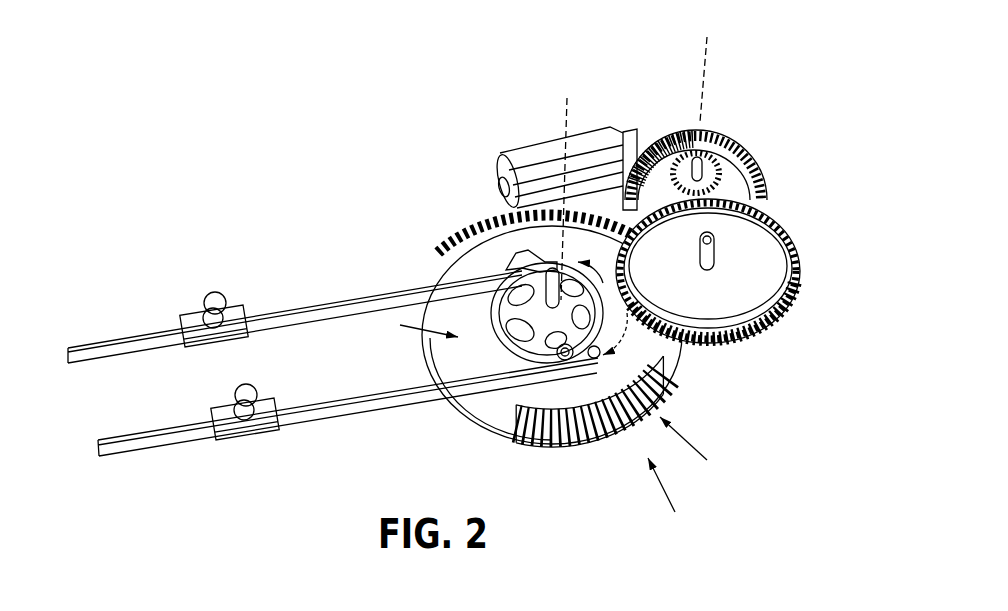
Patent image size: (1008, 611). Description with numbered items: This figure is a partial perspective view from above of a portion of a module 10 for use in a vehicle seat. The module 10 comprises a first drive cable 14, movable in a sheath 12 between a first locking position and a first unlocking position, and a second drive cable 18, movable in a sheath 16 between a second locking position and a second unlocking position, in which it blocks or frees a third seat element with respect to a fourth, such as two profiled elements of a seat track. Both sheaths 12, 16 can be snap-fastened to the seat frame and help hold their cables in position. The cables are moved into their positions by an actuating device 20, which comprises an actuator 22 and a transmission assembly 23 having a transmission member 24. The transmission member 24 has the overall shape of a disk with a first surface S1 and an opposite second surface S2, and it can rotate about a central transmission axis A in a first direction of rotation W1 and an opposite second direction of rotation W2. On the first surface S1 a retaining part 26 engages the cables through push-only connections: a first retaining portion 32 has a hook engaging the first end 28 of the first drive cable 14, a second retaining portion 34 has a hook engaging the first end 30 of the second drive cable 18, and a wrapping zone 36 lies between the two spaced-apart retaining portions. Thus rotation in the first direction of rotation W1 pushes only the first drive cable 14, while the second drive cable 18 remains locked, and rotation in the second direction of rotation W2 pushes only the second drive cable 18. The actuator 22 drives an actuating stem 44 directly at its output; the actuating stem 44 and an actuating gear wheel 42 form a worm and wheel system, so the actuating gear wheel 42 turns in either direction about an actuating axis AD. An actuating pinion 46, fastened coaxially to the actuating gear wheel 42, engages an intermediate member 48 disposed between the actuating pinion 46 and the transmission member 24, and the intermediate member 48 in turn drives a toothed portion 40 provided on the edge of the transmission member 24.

The module 10 is at (783, 85).
The sheath 12 is at (160, 292).
The first drive cable 14 is at (327, 298).
The sheath 16 is at (207, 478).
The second drive cable 18 is at (338, 412).
The actuating device 20 is at (666, 184).
The actuator 22 is at (550, 163).
The transmission assembly 23 is at (667, 499).
The transmission member 24 is at (458, 268).
The retaining part 26 is at (536, 365).
The first end 28 is at (523, 165).
The first end 30 is at (596, 360).
The first retaining portion 32 is at (505, 252).
The second retaining portion 34 is at (569, 362).
The wrapping zone 36 is at (506, 378).
The toothed portion 40 is at (680, 372).
The actuating gear wheel 42 is at (727, 143).
The actuating stem 44 is at (680, 130).
The actuating pinion 46 is at (752, 148).
The intermediate member 48 is at (790, 232).
The central transmission axis A is at (567, 98).
The actuating axis AD is at (708, 52).
The first surface S1 is at (410, 324).
The second surface S2 is at (692, 451).
The first direction of rotation W1 is at (629, 341).
The second direction of rotation W2 is at (587, 261).